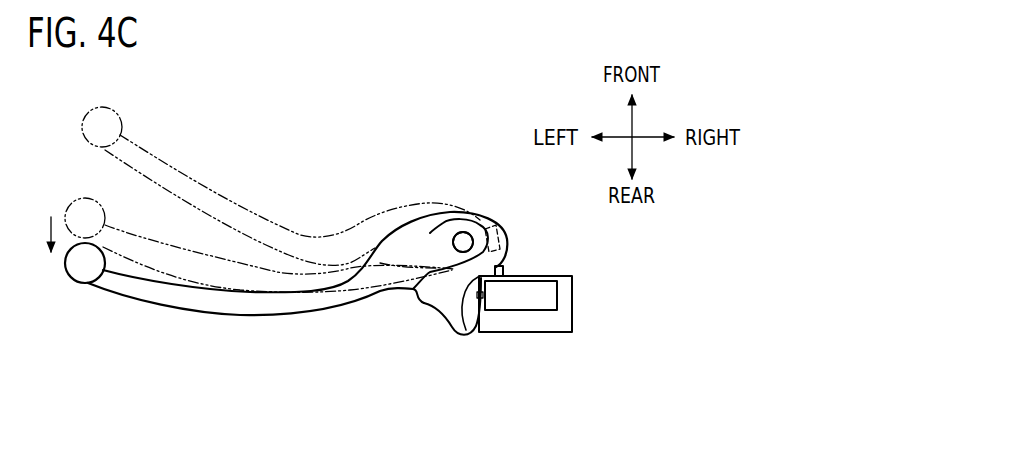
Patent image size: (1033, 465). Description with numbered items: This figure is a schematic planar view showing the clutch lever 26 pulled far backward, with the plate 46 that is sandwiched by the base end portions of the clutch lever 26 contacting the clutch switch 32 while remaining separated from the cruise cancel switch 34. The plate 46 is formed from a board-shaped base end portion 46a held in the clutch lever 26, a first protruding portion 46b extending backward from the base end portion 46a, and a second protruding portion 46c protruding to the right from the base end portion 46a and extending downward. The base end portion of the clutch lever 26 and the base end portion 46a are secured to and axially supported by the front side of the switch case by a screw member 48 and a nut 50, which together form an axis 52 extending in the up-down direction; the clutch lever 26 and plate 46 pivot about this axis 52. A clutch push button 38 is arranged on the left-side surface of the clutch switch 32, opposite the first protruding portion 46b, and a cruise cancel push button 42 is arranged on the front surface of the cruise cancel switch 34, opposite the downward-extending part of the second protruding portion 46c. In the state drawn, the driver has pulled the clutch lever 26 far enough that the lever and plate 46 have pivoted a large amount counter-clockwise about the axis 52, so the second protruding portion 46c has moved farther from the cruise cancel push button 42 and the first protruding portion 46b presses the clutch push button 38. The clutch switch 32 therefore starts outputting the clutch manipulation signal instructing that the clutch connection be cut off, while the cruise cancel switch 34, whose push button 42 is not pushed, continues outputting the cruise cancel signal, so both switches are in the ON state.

The clutch lever 26 is at (165, 296).
The axis 52 is at (433, 206).
The screw member 48 is at (463, 242).
The nut 50 is at (463, 240).
The plate 46 is at (449, 291).
The base end portion 46a is at (416, 290).
The first protruding portion 46b is at (452, 311).
The second protruding portion 46c is at (498, 222).
The cruise cancel push button 42 is at (503, 273).
The cruise cancel switch 34 is at (573, 302).
The clutch switch 32 is at (537, 302).
The clutch push button 38 is at (462, 329).